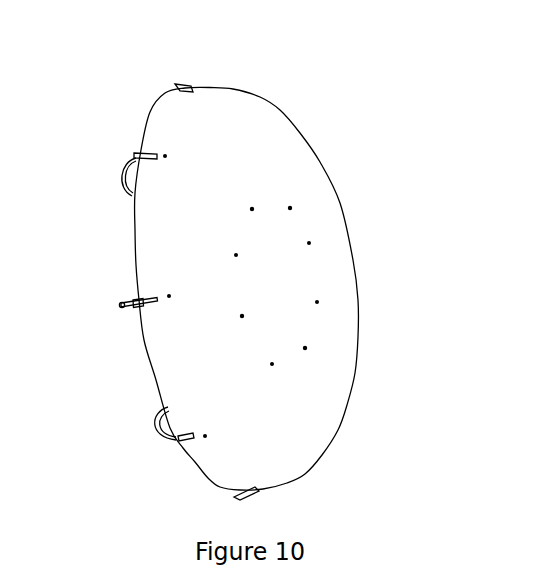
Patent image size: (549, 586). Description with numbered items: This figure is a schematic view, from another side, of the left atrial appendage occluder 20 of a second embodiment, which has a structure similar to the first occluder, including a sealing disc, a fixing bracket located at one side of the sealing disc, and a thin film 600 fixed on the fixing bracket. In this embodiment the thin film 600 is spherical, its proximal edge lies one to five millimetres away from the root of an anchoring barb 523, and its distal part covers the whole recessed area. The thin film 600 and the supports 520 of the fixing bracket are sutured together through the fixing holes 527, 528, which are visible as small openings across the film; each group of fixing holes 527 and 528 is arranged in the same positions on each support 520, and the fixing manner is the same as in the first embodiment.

The left atrial appendage occluder 20 is at (393, 160).
The anchoring barb 523 is at (177, 87).
The fixing hole 527 is at (169, 295).
The fixing hole 528 is at (310, 243).
The support 520 is at (153, 434).
The thin film 600 is at (310, 415).